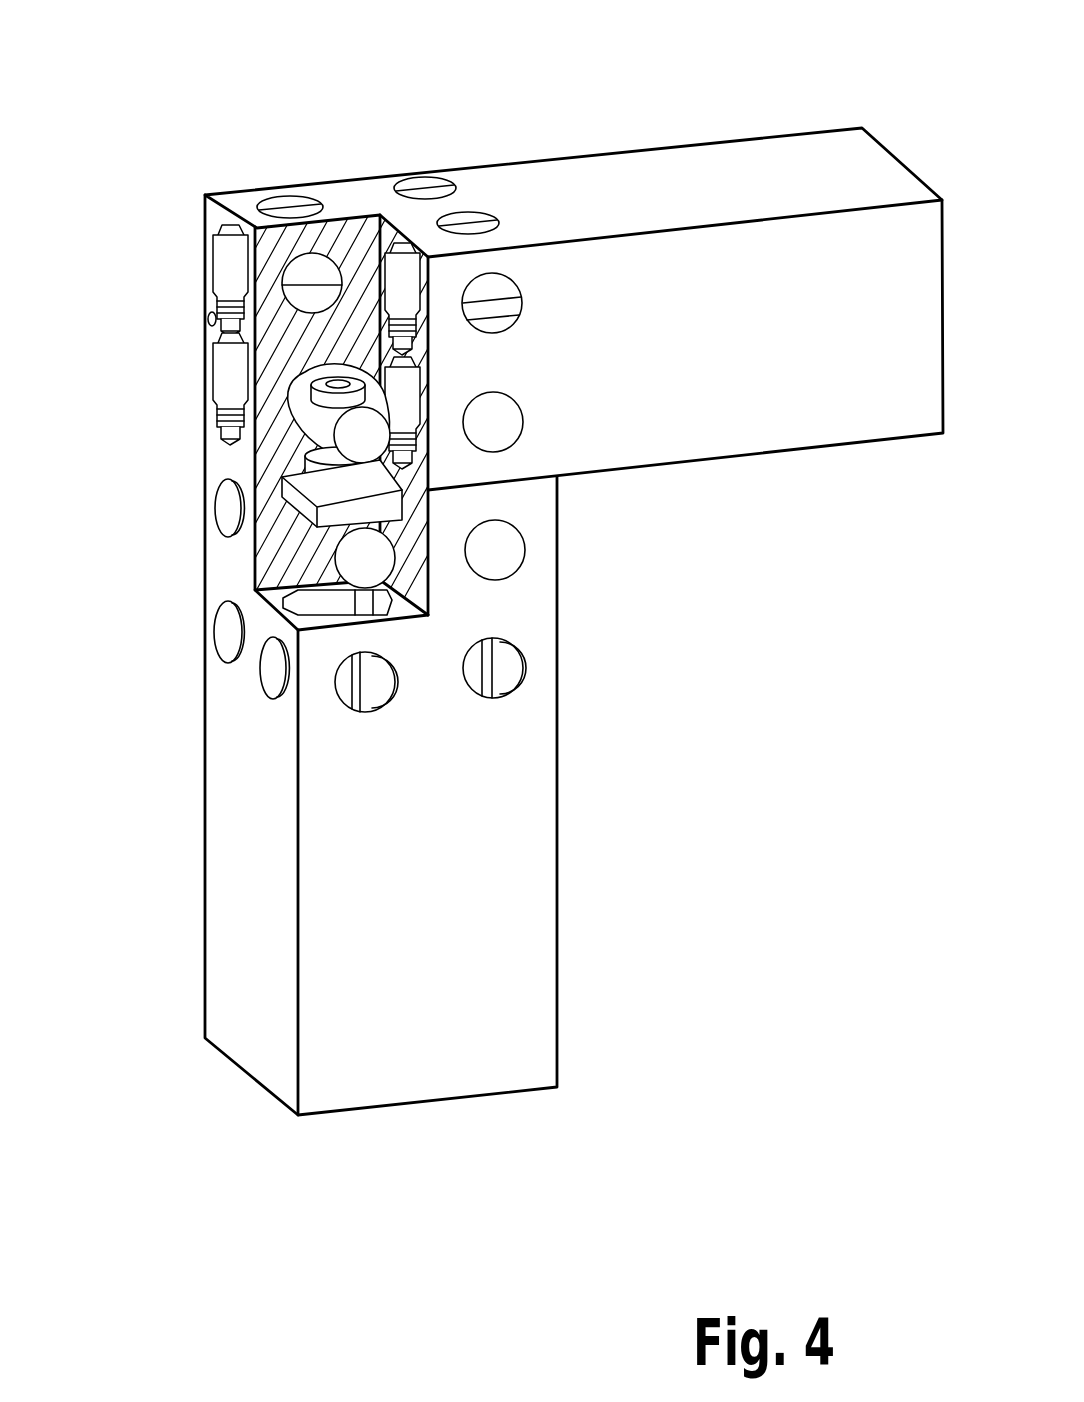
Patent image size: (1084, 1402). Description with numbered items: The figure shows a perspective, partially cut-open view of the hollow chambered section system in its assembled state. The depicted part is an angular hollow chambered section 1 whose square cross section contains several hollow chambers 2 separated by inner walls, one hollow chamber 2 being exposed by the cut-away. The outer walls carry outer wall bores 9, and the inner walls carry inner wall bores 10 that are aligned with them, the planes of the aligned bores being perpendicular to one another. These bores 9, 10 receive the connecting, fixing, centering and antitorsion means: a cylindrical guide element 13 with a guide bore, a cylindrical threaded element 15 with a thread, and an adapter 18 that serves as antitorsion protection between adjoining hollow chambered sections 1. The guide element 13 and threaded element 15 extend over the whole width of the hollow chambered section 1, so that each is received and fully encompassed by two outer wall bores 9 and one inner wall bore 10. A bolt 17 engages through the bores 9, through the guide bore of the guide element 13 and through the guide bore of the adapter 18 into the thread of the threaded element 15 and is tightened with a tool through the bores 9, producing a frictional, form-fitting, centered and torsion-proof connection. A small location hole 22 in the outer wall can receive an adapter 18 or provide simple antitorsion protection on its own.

The hollow chambered section 1 is at (680, 143).
The hollow chamber 2 is at (223, 258).
The outer wall bore 9 is at (423, 192).
The inner wall bore 10 is at (320, 265).
The guide element 13 is at (353, 438).
The threaded element 15 is at (345, 548).
The bolt 17 is at (320, 381).
The adapter 18 is at (305, 502).
The location hole 22 is at (206, 316).